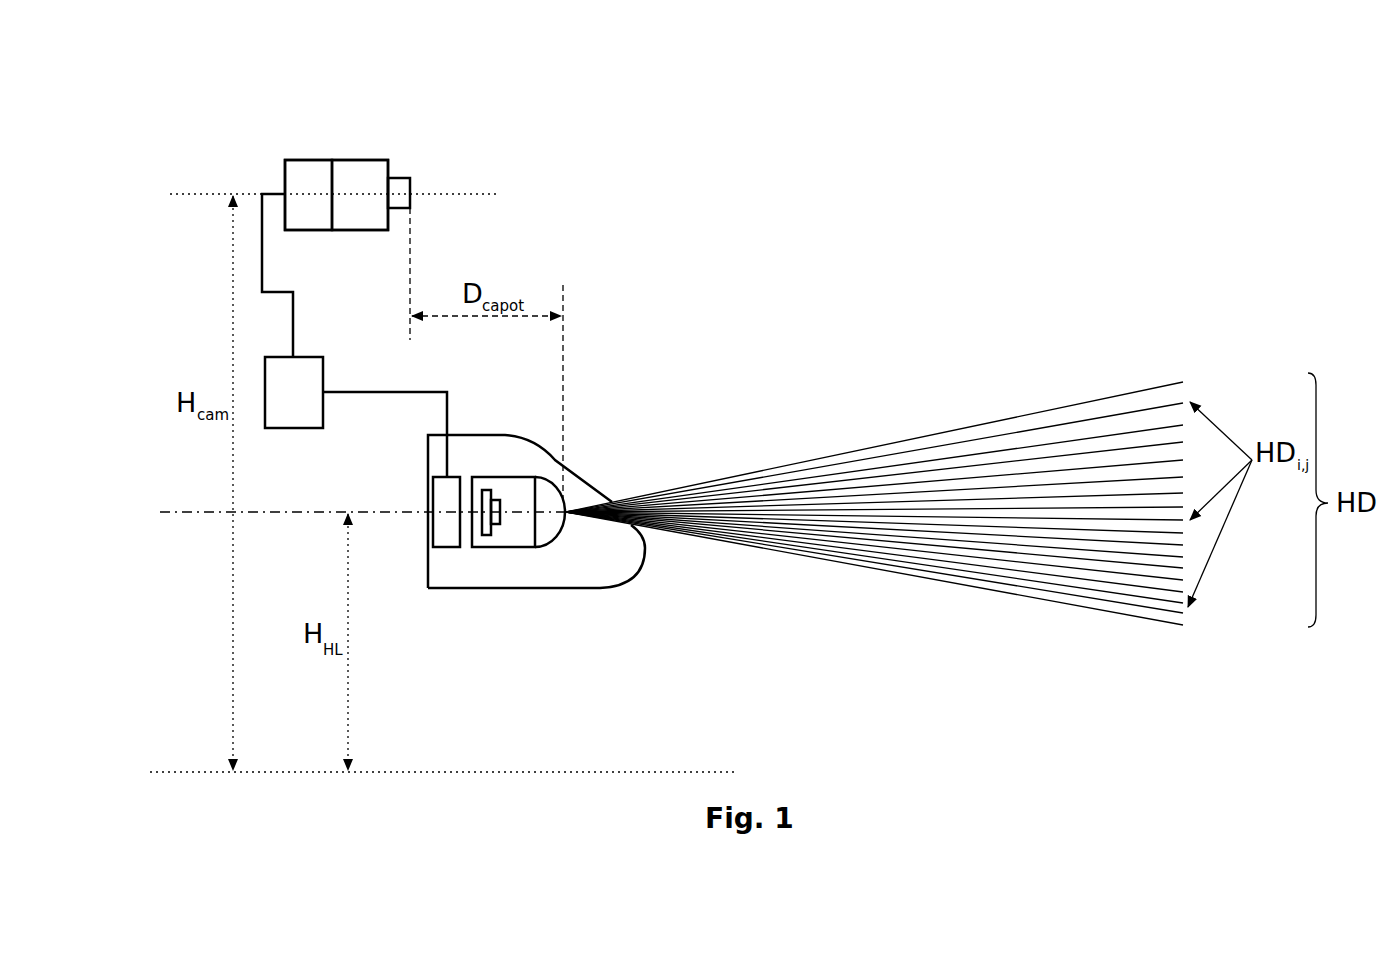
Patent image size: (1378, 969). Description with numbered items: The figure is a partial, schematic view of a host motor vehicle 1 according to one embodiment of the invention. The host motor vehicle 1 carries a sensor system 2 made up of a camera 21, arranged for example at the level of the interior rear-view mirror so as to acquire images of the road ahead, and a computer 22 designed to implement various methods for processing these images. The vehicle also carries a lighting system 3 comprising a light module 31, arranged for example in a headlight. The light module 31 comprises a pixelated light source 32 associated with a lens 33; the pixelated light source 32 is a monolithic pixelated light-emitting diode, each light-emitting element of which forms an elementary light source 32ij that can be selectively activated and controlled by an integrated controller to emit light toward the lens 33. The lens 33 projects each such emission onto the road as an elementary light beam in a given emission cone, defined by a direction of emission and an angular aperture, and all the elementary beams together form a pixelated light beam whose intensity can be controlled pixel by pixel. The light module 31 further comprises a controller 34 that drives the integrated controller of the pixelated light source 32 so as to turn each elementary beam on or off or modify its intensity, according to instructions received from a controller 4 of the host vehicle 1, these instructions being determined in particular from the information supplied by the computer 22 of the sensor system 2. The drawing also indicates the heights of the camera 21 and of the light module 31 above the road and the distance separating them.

The host motor vehicle 1 is at (735, 267).
The sensor system 2 is at (382, 227).
The camera 21 is at (360, 195).
The computer 22 is at (308, 195).
The lighting system 3 is at (522, 562).
The controller 4 is at (356, 417).
The light module 31 is at (518, 548).
The pixelated light source 32 is at (474, 537).
The elementary light source 32ij is at (468, 587).
The lens 33 is at (545, 537).
The controller 34 is at (433, 487).